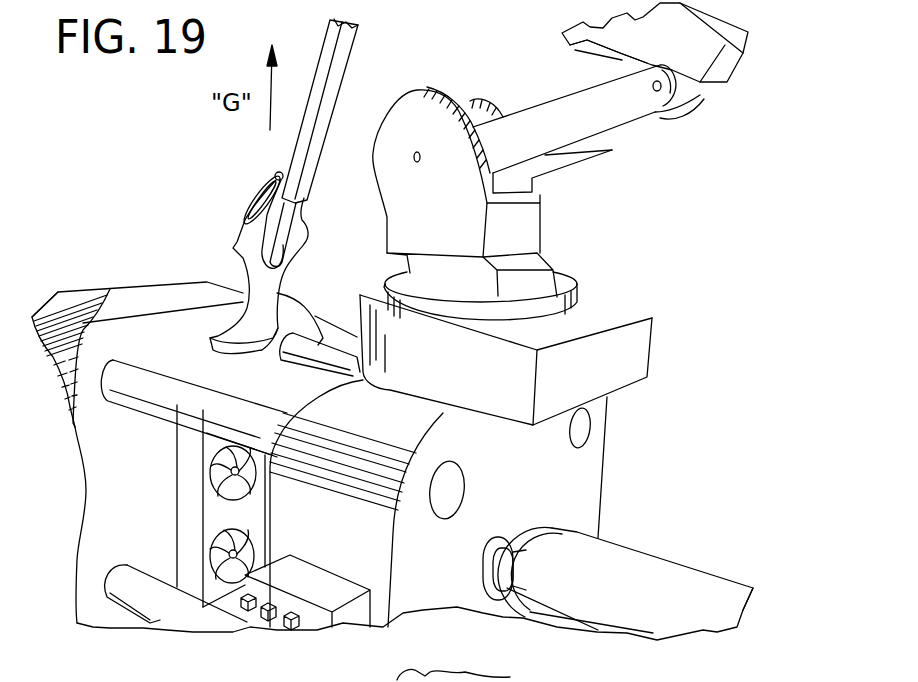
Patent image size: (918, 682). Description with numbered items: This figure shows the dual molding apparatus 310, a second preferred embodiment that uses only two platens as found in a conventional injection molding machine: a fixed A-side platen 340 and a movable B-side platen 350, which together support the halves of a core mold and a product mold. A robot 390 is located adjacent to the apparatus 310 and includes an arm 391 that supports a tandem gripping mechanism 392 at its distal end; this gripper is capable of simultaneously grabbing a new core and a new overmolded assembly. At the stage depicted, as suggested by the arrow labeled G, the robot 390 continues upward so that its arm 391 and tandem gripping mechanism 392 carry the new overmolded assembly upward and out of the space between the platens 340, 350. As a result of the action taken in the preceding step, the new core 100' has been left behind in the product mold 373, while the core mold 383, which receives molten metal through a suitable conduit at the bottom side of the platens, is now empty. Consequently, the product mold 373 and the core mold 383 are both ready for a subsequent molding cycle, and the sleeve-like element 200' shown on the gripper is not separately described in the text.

The arm 391 is at (335, 97).
The sleeve 200' is at (226, 199).
The tandem gripping mechanism 392 is at (303, 223).
The B-side platen 350 is at (122, 308).
The robot 390 is at (718, 100).
The dual molding apparatus 310 is at (692, 287).
The A-side platen 340 is at (588, 483).
The product mold 373 is at (210, 463).
The new core 100' is at (236, 517).
The core mold 383 is at (210, 552).